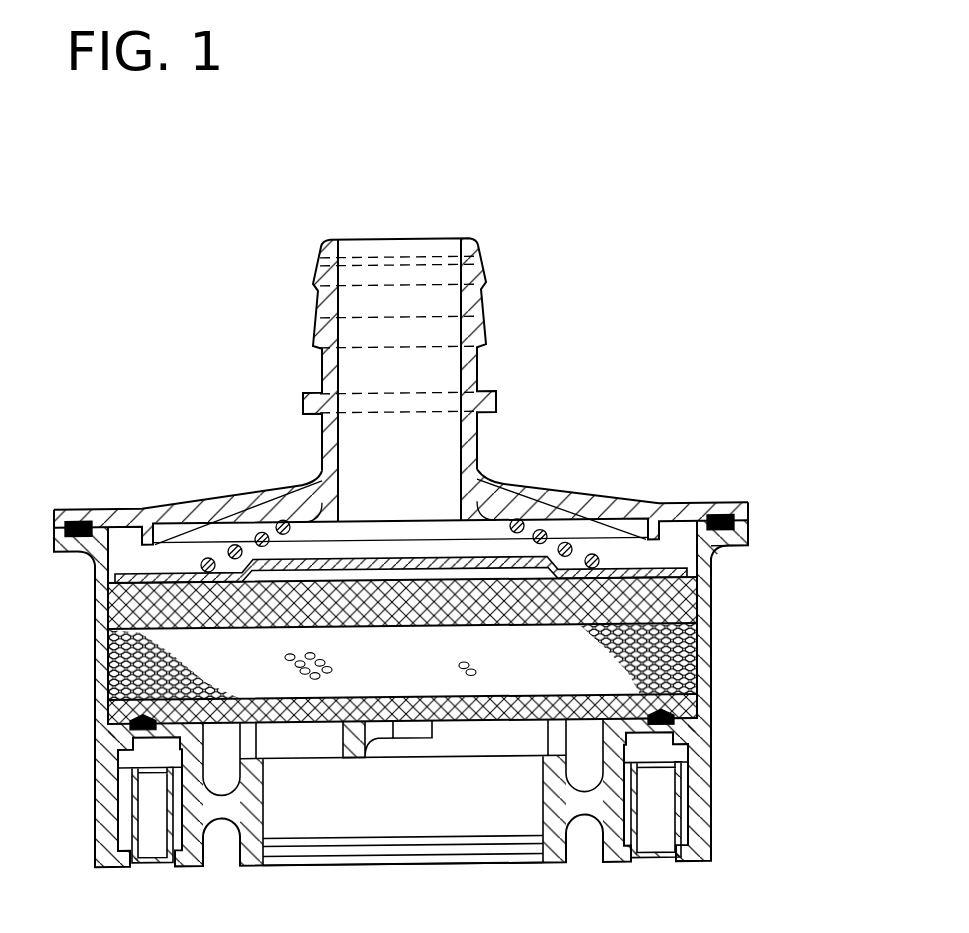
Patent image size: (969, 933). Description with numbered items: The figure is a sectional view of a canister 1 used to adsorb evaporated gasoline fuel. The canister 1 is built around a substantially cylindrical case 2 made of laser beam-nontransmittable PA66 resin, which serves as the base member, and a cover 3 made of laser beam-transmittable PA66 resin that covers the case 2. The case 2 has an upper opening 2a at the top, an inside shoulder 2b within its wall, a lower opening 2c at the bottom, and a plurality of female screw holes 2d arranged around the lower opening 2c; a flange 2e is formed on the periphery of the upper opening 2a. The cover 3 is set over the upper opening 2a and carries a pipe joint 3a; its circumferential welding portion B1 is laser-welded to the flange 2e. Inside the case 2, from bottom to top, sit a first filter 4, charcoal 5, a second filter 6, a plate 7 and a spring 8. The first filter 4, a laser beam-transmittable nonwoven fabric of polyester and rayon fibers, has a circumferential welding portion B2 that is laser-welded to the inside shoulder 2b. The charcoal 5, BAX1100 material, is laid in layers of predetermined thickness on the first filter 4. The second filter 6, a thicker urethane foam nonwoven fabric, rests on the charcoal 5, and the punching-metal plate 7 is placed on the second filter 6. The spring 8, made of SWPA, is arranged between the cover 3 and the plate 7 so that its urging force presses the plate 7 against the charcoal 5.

The canister 1 is at (543, 141).
The case 2 is at (712, 761).
The upper opening 2a is at (685, 529).
The inside shoulder 2b is at (698, 725).
The lower opening 2c is at (533, 822).
The female screw hole 2d is at (168, 826).
The flange 2e is at (736, 542).
The cover 3 is at (535, 486).
The pipe joint 3a is at (477, 264).
The first filter 4 is at (108, 721).
The charcoal 5 is at (118, 667).
The second filter 6 is at (125, 620).
The plate 7 is at (115, 572).
The spring 8 is at (233, 545).
The circumferential welding portion B1 is at (78, 518).
The circumferential welding portion B2 is at (132, 724).